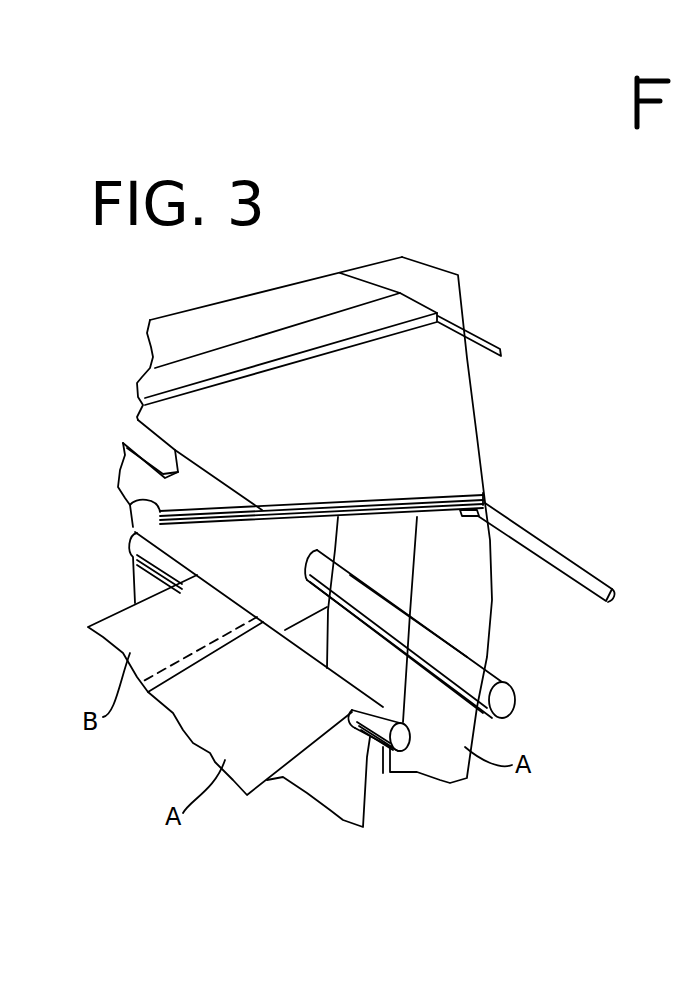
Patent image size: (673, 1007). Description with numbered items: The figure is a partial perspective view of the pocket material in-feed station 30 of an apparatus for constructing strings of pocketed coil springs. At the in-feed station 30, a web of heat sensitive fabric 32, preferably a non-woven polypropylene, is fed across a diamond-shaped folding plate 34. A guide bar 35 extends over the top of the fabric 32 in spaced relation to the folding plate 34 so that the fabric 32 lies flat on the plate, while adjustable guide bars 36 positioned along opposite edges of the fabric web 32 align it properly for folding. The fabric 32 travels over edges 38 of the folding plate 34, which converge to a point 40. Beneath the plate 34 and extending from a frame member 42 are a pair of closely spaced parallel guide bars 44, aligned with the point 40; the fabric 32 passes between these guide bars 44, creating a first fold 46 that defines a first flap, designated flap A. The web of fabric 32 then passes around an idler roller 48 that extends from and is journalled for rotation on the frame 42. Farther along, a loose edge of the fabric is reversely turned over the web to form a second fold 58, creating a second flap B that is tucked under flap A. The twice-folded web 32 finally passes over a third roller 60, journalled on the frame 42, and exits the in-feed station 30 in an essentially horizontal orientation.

The pocket material in-feed station 30 is at (562, 332).
The web of heat sensitive fabric 32 is at (293, 295).
The diamond-shaped folding plate 34 is at (442, 295).
The guide bar 35 is at (382, 307).
The adjustable guide bars 36 is at (485, 333).
The edges of the folding plate 38 is at (475, 437).
The point of the folding plate 40 is at (485, 502).
The frame member 42 is at (273, 569).
The pair of closely spaced parallel guide bars 44 is at (610, 600).
The first fold 46 is at (493, 605).
The idler roller 48 is at (502, 707).
The second fold 58 is at (113, 612).
The third roller 60 is at (378, 757).